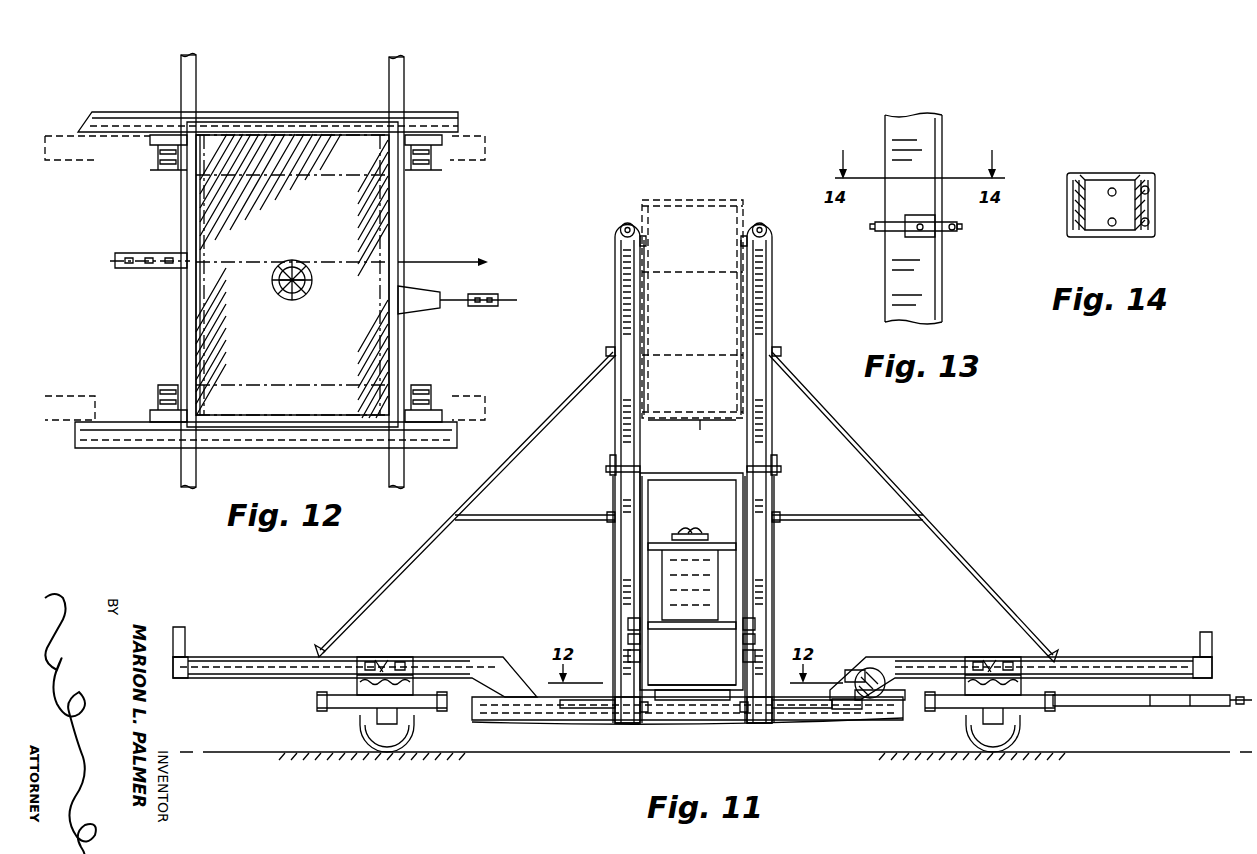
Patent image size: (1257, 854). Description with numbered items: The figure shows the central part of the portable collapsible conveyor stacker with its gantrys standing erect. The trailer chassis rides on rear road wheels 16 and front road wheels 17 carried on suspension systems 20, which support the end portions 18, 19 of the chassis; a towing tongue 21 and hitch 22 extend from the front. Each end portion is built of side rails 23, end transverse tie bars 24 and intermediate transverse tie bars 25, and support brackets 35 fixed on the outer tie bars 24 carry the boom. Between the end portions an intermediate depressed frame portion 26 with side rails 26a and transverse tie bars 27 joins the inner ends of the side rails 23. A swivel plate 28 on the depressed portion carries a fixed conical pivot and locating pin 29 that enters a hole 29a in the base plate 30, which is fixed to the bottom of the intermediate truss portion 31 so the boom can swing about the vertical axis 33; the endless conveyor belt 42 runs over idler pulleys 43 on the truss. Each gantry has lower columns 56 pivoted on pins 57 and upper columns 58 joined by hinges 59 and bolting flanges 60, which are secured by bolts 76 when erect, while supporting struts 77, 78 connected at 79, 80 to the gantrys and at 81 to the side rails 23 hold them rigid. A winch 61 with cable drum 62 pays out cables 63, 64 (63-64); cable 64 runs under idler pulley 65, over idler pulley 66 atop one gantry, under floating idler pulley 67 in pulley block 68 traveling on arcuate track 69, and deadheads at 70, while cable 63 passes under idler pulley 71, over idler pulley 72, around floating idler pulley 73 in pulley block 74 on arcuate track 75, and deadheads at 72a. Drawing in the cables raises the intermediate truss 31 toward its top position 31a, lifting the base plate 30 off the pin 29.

In FIG. 11, the rear road wheels 16 is at (395, 755).
In FIG. 11, the front road wheels 17 is at (990, 755).
In FIG. 11, the end portion of trailer chassis 18 is at (312, 666).
In FIG. 11, the end portion of trailer chassis 19 is at (1099, 668).
In FIG. 11, the suspension systems 20 is at (366, 720).
In FIG. 11, the towing tongue 21 is at (1195, 705).
In FIG. 11, the hitch 22 is at (1240, 696).
In FIG. 11, the side rails 23 is at (240, 674).
In FIG. 11, the end transverse tie bars 24 is at (186, 674).
In FIG. 11, the intermediate transverse tie bars 25 is at (412, 656).
In FIG. 12, the intermediate depressed frame portion 26 is at (292, 114).
In FIG. 11, the intermediate depressed frame portion 26 is at (590, 724).
In FIG. 12, the side rails of depressed frame portion 26a is at (147, 114).
In FIG. 11, the side rails of depressed frame portion 26a is at (556, 708).
In FIG. 12, the transverse tie bars 27 is at (406, 224).
In FIG. 11, the transverse tie bars 27 is at (472, 702).
In FIG. 12, the swivel plate 28 is at (198, 215).
In FIG. 11, the swivel plate 28 is at (668, 690).
In FIG. 12, the conical pivot and locating pin 29 is at (300, 299).
In FIG. 11, the conical pivot and locating pin 29 is at (700, 690).
In FIG. 12, the hole in base plate 29a is at (285, 297).
In FIG. 11, the hole in base plate 29a is at (702, 422).
In FIG. 12, the base plate 30 is at (283, 355).
In FIG. 11, the base plate 30 is at (665, 422).
In FIG. 12, the intermediate truss portion 31 is at (400, 95).
In FIG. 11, the intermediate truss portion 31 is at (707, 475).
In FIG. 11, the top position of intermediate truss 31a is at (704, 200).
In FIG. 12, the vertical axis 33 is at (298, 262).
In FIG. 11, the support brackets 35 is at (185, 632).
In FIG. 11, the endless conveyor belt 42 is at (692, 586).
In FIG. 11, the idler pulleys 43 is at (704, 532).
In FIG. 12, the lower columns 56 is at (152, 148).
In FIG. 11, the lower columns 56 is at (615, 558).
In FIG. 13, the lower columns 56 is at (896, 291).
In FIG. 12, the pins 57 is at (162, 165).
In FIG. 11, the pins 57 is at (645, 712).
In FIG. 11, the upper columns 58 is at (618, 313).
In FIG. 13, the upper columns 58 is at (905, 142).
In FIG. 14, the upper columns 58 is at (1113, 188).
In FIG. 11, the hinges 59 is at (606, 470).
In FIG. 13, the hinges 59 is at (880, 230).
In FIG. 14, the hinges 59 is at (1068, 212).
In FIG. 13, the bolting flanges 60 is at (962, 230).
In FIG. 11, the winch 61 is at (868, 668).
In FIG. 11, the cable drum 62 is at (882, 668).
In FIG. 12, the cable 63 is at (436, 262).
In FIG. 11, the cable 63 is at (650, 290).
In FIG. 12, the cable 64 is at (506, 295).
In FIG. 11, the cable 64 is at (735, 290).
In FIG. 11, the cables 63-64 is at (850, 710).
In FIG. 12, the idler pulley 65 is at (470, 307).
In FIG. 11, the idler pulley 65 is at (790, 710).
In FIG. 11, the idler pulley 66 is at (765, 222).
In FIG. 11, the floating idler pulley 67 is at (757, 622).
In FIG. 11, the pulley block 68 is at (757, 632).
In FIG. 11, the arcuate track 69 is at (757, 665).
In FIG. 11, the deadhead 70 is at (744, 240).
In FIG. 12, the idler pulley 71 is at (140, 269).
In FIG. 11, the idler pulley 71 is at (600, 710).
In FIG. 11, the idler pulley 72 is at (622, 222).
In FIG. 11, the deadhead 72a is at (646, 240).
In FIG. 11, the floating idler pulley 73 is at (628, 620).
In FIG. 11, the pulley block 74 is at (626, 640).
In FIG. 11, the arcuate track 75 is at (628, 662).
In FIG. 11, the bolts 76 is at (612, 458).
In FIG. 13, the bolts 76 is at (925, 212).
In FIG. 14, the bolts 76 is at (1147, 188).
In FIG. 11, the supporting strut 77 is at (486, 480).
In FIG. 11, the supporting strut 78 is at (530, 522).
In FIG. 11, the strut connection 79 is at (606, 347).
In FIG. 11, the strut connection 80 is at (610, 514).
In FIG. 11, the strut connection 81 is at (322, 652).